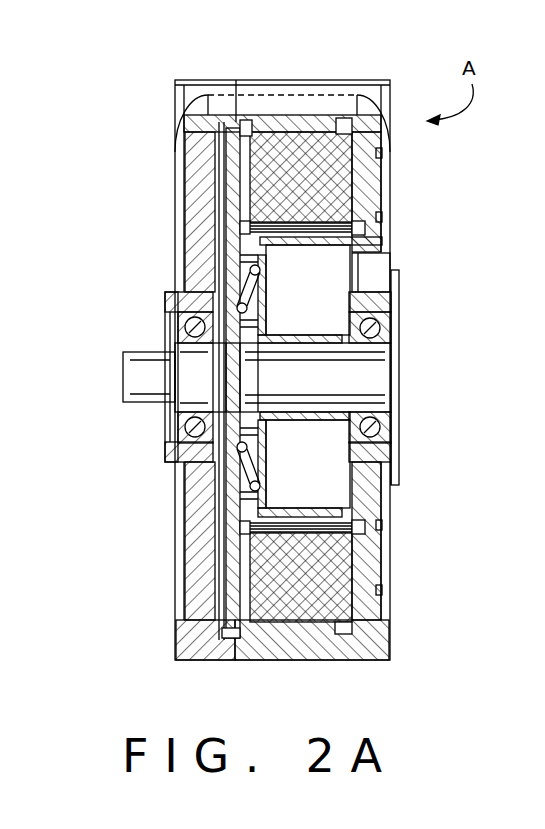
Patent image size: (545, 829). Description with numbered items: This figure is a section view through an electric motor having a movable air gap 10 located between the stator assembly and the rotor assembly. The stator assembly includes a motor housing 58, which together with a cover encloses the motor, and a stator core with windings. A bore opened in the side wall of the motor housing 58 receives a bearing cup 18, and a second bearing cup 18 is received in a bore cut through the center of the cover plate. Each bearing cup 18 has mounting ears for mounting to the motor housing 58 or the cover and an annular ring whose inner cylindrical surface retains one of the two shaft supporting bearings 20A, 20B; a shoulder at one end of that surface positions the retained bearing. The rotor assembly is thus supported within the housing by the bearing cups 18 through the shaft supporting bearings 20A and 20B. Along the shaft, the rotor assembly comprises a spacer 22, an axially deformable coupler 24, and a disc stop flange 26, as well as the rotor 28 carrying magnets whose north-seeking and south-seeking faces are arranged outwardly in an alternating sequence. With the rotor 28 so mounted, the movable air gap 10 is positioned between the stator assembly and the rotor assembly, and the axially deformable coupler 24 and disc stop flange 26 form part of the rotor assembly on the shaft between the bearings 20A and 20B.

The movable air gap 10 is at (258, 138).
The bearing cups 18 is at (170, 300).
The shaft supporting bearing 20A is at (398, 432).
The shaft supporting bearing 20B is at (173, 438).
The spacer 22 is at (340, 335).
The axially deformable coupler 24 is at (290, 420).
The disc stop flange 26 is at (288, 421).
The rotor 28 is at (182, 142).
The motor housing 58 is at (375, 656).